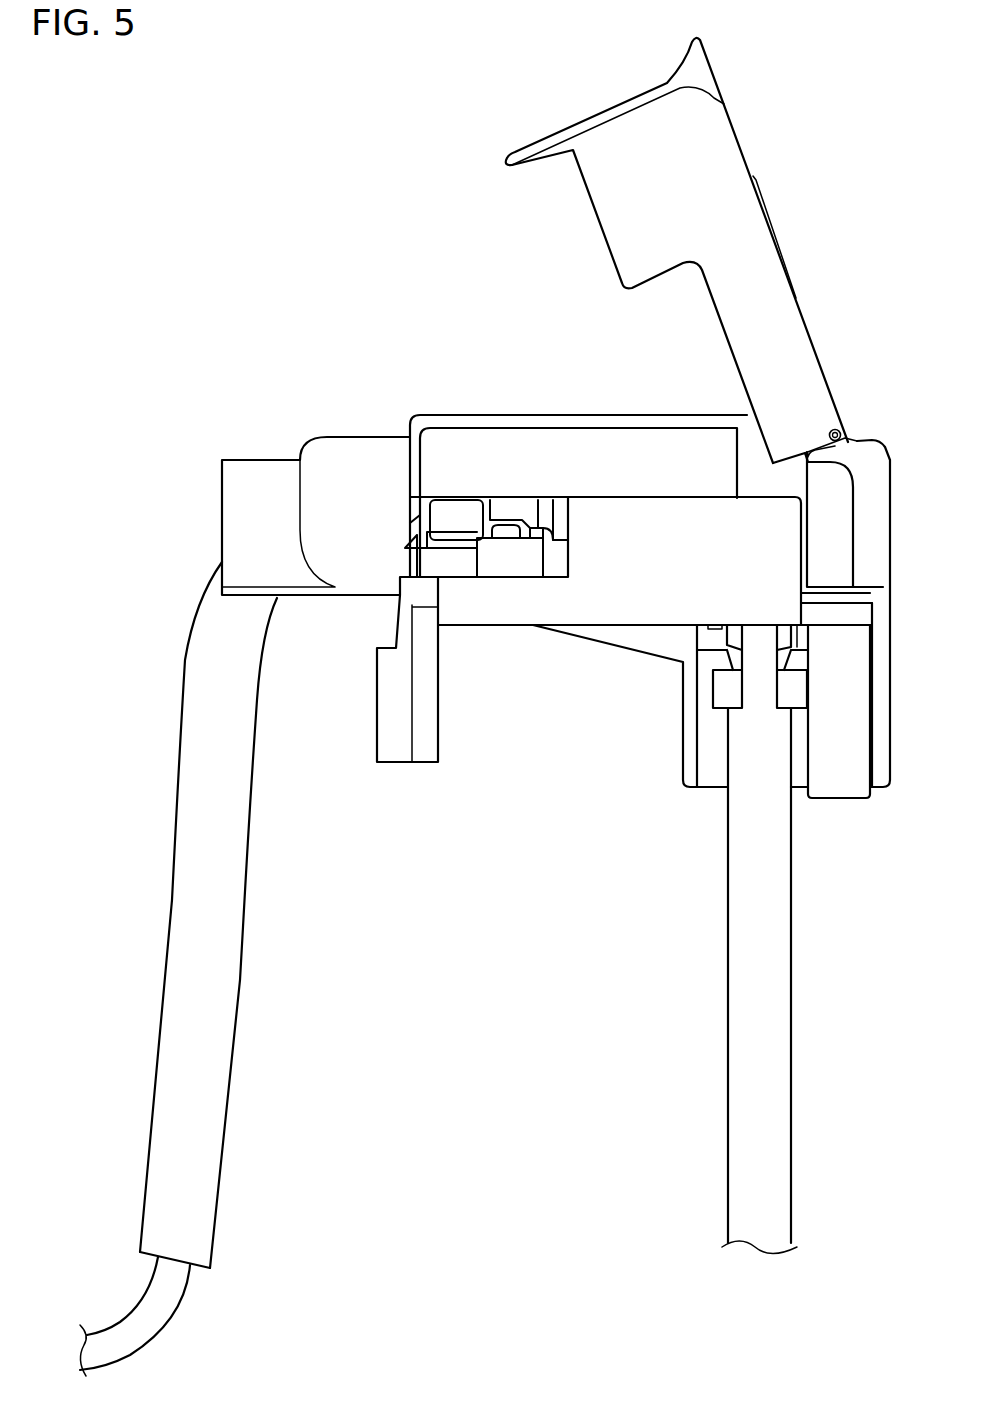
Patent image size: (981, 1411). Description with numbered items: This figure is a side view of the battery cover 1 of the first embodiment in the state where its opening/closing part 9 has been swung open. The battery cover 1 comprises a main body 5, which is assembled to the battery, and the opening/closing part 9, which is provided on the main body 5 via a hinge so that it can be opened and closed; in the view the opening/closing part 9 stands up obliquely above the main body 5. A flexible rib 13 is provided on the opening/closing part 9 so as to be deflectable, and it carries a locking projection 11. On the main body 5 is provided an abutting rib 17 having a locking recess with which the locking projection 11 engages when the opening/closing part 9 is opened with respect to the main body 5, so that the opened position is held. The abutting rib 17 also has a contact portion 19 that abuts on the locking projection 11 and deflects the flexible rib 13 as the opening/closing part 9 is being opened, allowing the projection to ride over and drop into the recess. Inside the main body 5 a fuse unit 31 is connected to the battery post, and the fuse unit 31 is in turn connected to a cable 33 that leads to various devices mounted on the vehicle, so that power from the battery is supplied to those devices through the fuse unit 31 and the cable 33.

The battery cover 1 is at (549, 96).
The main body 5 is at (652, 562).
The opening/closing part 9 is at (727, 145).
The locking projection 11 is at (839, 431).
The flexible rib 13 is at (833, 413).
The abutting rib 17 is at (842, 455).
The contact portion 19 is at (818, 434).
The fuse unit 31 is at (518, 494).
The cable 33 is at (190, 1008).